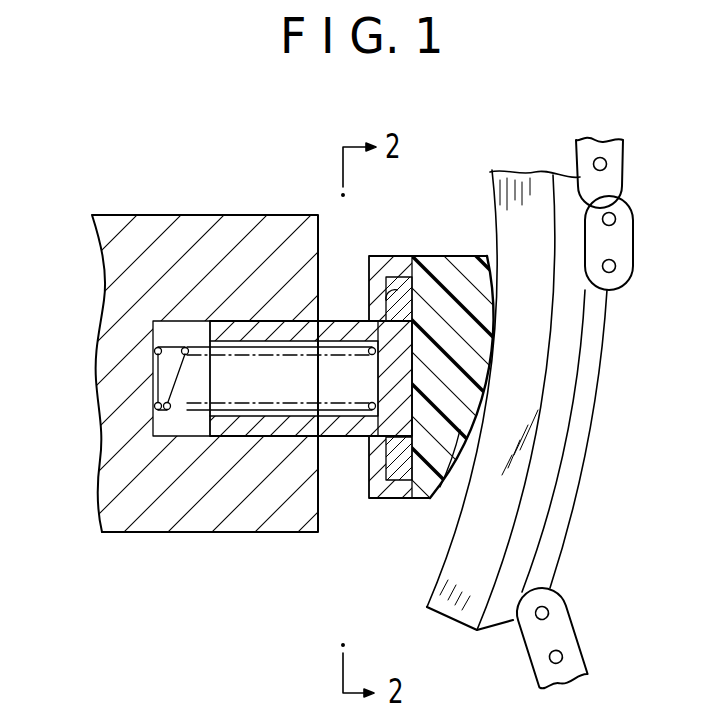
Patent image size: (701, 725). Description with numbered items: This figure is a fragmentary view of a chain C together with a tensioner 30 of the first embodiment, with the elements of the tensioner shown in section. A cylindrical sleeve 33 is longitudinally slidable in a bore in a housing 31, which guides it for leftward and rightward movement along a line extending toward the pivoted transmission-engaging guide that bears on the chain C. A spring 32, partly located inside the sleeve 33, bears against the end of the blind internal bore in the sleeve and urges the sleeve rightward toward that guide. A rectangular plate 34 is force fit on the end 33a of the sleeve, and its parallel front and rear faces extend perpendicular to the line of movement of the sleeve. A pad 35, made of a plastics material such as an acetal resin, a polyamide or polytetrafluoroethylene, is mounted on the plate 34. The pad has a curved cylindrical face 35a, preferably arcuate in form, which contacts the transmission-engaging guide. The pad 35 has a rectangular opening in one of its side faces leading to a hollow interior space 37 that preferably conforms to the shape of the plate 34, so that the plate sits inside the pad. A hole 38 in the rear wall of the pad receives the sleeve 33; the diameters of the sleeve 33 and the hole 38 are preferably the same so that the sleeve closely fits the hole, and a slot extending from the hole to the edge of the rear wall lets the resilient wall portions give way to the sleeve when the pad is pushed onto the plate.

The housing block 30 is at (246, 210).
The housing 31 is at (111, 540).
The spring 32 is at (168, 412).
The cylindrical sleeve 33 is at (332, 452).
The end of the sleeve 33a is at (362, 430).
The rectangular plate 34 is at (392, 499).
The pad 35 is at (437, 249).
The arcuate guide surface 35a is at (450, 480).
The hollow interior space 37 is at (400, 277).
The hole 38 is at (376, 326).
The chain C is at (575, 630).